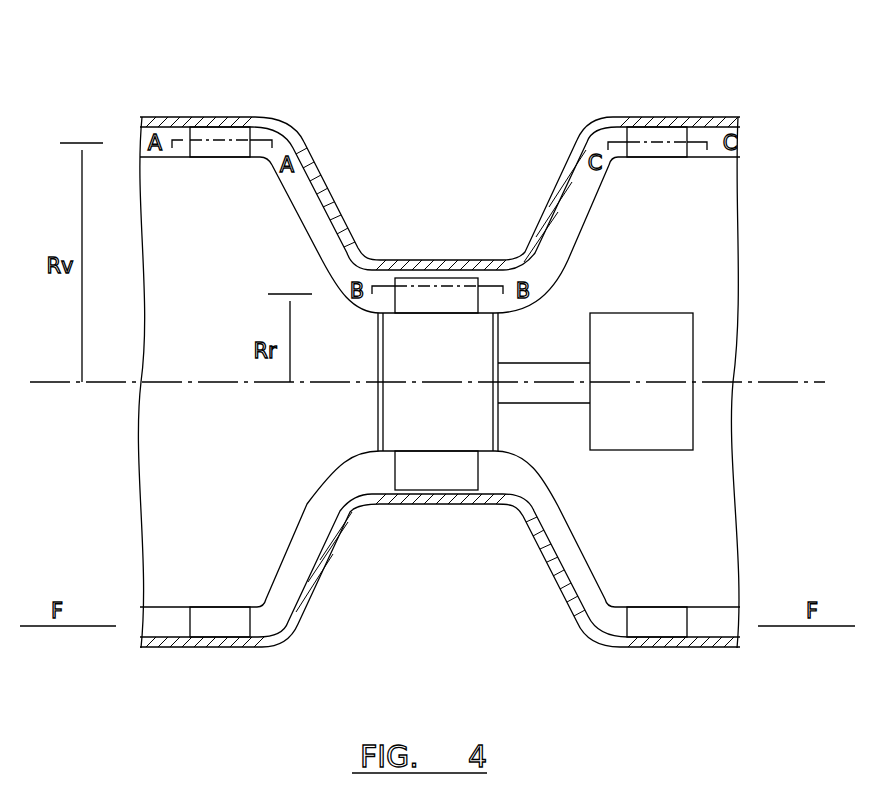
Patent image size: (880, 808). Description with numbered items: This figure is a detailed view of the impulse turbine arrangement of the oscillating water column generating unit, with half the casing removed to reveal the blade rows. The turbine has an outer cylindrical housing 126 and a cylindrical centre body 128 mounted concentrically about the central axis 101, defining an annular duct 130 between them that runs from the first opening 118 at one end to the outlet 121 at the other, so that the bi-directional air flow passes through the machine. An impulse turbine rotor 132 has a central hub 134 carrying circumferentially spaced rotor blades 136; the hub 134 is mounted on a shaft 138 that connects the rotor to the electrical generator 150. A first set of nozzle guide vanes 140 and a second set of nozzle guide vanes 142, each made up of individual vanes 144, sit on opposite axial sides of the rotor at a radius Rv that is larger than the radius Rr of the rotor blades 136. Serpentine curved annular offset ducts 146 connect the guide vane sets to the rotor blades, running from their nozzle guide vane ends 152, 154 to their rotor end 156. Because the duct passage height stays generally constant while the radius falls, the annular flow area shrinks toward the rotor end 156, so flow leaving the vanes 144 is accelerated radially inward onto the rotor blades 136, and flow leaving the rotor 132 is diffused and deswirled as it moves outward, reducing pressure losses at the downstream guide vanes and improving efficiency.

The central axis 101 is at (765, 387).
The first opening 118 is at (122, 655).
The outlet 121 is at (722, 622).
The outer cylindrical housing 126 is at (183, 120).
The cylindrical centre body 128 is at (180, 487).
The annular duct 130 is at (155, 128).
The rotor 132 is at (428, 262).
The central hub 134 is at (387, 448).
The rotor blades 136 is at (443, 470).
The shaft 138 is at (545, 363).
The first set of nozzle guide vanes 140 is at (222, 130).
The second set of nozzle guide vanes 142 is at (660, 135).
The nozzle guide vanes 144 is at (222, 620).
The annular offset ducts 146 is at (305, 198).
The drive unit 150 is at (657, 452).
The nozzle guide vane end of annular offset duct 152 is at (252, 180).
The nozzle guide vane end of annular offset duct 154 is at (625, 178).
The rotor end of annular offset duct 156 is at (513, 258).